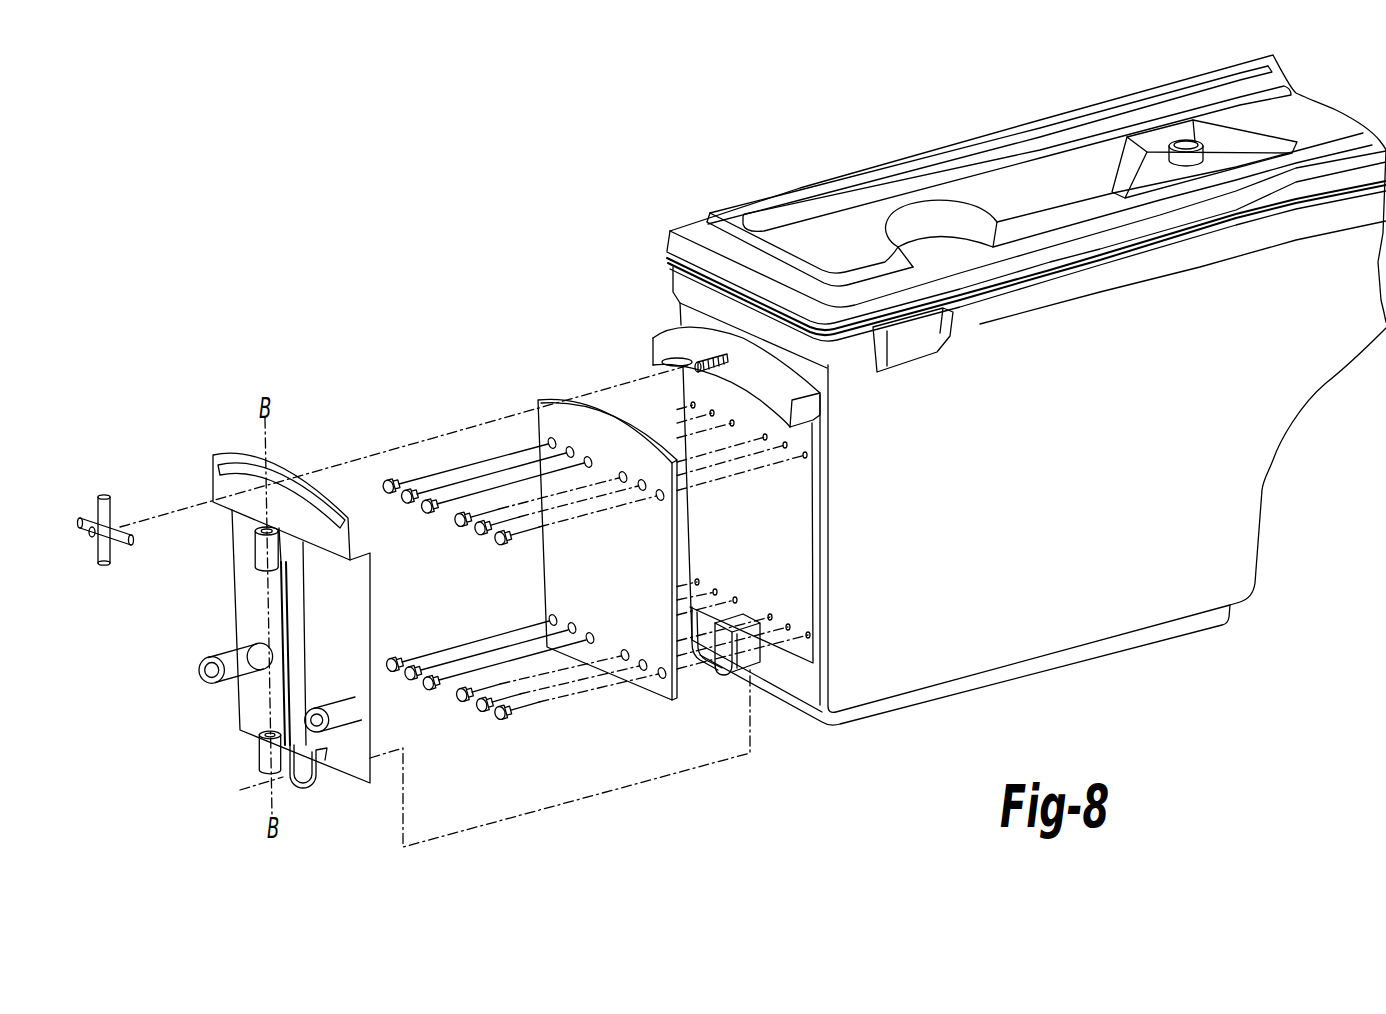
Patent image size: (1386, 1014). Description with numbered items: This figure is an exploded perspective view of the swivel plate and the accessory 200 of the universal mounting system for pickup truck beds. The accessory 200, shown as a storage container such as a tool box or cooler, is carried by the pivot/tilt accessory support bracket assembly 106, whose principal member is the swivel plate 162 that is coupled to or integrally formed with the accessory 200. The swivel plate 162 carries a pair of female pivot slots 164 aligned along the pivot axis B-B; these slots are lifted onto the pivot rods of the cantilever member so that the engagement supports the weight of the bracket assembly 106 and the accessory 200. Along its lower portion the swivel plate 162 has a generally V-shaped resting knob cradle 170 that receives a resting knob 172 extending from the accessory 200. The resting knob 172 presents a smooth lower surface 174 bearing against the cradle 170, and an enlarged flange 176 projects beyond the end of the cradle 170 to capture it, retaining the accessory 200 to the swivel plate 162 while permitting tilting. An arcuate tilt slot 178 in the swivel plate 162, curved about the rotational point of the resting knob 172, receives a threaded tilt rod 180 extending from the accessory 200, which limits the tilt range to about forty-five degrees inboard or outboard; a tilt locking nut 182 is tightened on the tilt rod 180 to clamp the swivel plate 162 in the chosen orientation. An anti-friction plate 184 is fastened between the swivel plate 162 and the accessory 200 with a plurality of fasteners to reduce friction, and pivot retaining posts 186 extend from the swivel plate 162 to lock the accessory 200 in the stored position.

The accessory 200 is at (841, 167).
The pivot/tilt accessory support bracket assembly 106 is at (452, 393).
The anti-friction plate 184 is at (553, 399).
The tilt rod 180 is at (694, 365).
The arcuate tilt slot 178 is at (229, 464).
The tilt locking nut 182 is at (119, 523).
The female pivot slots 164 is at (255, 530).
The swivel plate 162 is at (235, 597).
The pivot retaining post 186 is at (212, 656).
The resting knob cradle 170 is at (304, 791).
The enlarged flange 176 is at (716, 692).
The smooth lower surface 174 is at (740, 682).
The resting knob 172 is at (757, 672).